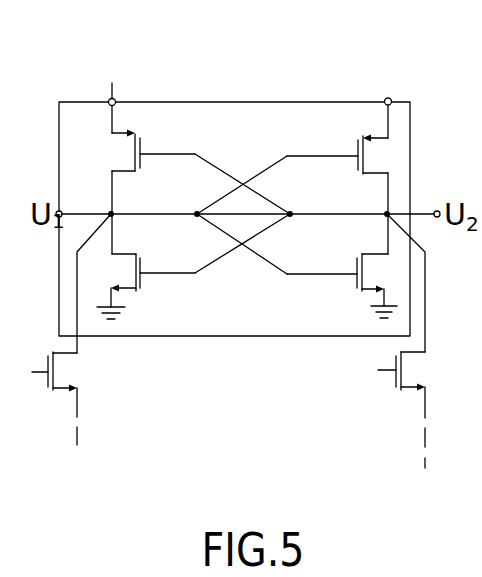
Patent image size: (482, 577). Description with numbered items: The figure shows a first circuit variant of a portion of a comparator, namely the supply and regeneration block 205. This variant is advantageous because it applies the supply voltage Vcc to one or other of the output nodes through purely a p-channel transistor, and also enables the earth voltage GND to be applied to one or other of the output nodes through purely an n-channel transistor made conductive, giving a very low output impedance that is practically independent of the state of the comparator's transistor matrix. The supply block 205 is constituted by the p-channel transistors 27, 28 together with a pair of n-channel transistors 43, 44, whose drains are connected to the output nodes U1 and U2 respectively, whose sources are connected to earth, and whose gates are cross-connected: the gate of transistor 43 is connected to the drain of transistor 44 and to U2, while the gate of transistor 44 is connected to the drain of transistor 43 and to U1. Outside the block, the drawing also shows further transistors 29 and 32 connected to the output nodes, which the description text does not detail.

The supply and regeneration block 205 is at (220, 102).
The p-channel transistor 27 is at (133, 151).
The p-channel transistor 28 is at (358, 151).
The n-channel transistor 43 is at (134, 290).
The n-channel transistor 44 is at (358, 293).
The transistor 29 is at (70, 355).
The transistor 32 is at (407, 392).